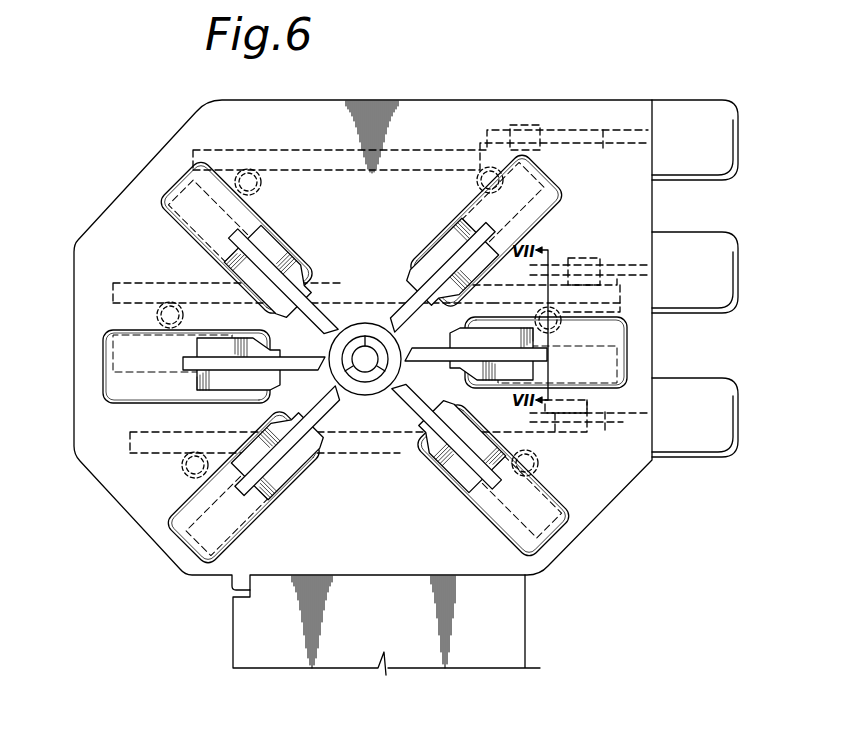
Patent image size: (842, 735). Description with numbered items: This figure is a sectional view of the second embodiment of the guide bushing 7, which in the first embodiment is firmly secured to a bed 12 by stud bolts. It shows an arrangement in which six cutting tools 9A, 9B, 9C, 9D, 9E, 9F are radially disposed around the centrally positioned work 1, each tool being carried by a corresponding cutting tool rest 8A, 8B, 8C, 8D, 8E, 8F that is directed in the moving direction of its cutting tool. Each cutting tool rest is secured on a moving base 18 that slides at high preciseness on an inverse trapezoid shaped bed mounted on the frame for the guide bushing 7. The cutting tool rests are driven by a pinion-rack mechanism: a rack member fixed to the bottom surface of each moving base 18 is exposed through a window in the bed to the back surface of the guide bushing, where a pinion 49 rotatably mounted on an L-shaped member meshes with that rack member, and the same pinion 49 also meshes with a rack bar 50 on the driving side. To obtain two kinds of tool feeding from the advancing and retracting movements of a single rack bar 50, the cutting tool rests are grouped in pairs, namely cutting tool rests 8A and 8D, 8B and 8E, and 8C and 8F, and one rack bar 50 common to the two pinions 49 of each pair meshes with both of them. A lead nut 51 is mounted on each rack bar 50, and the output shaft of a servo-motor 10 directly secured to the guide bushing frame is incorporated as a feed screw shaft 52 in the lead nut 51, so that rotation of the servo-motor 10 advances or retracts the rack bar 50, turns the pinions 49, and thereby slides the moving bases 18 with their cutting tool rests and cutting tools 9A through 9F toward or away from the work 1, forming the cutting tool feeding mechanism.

The work 1 is at (352, 365).
The guide bushing 7 is at (411, 95).
The cutting tool rest 8A is at (292, 262).
The cutting tool rest 8B is at (436, 250).
The cutting tool rest 8C is at (445, 330).
The cutting tool rest 8D is at (448, 478).
The cutting tool rest 8E is at (292, 480).
The cutting tool rest 8F is at (232, 392).
The cutting tool 9A is at (330, 292).
The cutting tool 9B is at (400, 288).
The cutting tool 9C is at (428, 358).
The cutting tool 9D is at (406, 396).
The cutting tool 9E is at (330, 402).
The cutting tool 9F is at (302, 358).
The servo-motor 10 is at (688, 104).
The bed 12 is at (527, 618).
The moving base 18 is at (180, 223).
The pinion 49 is at (262, 185).
The rack bar 50 is at (400, 150).
The lead nut 51 is at (521, 124).
The feed screw shaft 52 is at (606, 130).